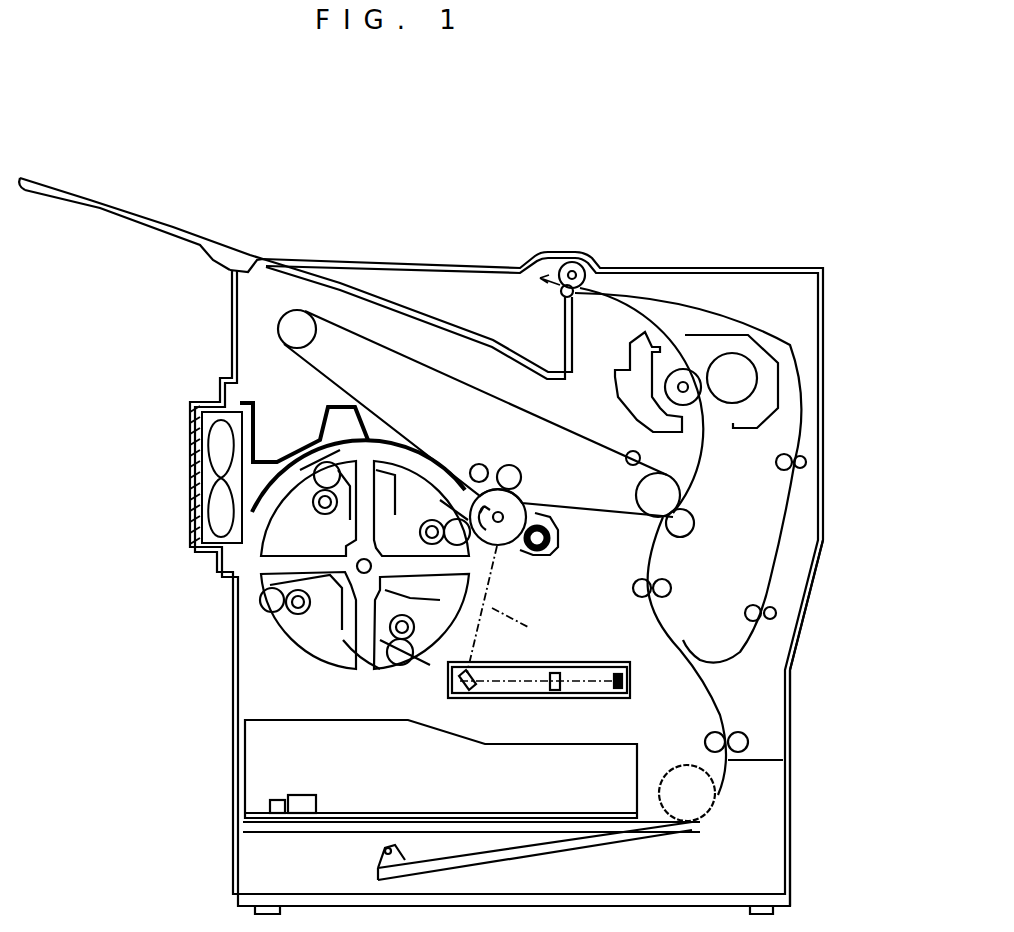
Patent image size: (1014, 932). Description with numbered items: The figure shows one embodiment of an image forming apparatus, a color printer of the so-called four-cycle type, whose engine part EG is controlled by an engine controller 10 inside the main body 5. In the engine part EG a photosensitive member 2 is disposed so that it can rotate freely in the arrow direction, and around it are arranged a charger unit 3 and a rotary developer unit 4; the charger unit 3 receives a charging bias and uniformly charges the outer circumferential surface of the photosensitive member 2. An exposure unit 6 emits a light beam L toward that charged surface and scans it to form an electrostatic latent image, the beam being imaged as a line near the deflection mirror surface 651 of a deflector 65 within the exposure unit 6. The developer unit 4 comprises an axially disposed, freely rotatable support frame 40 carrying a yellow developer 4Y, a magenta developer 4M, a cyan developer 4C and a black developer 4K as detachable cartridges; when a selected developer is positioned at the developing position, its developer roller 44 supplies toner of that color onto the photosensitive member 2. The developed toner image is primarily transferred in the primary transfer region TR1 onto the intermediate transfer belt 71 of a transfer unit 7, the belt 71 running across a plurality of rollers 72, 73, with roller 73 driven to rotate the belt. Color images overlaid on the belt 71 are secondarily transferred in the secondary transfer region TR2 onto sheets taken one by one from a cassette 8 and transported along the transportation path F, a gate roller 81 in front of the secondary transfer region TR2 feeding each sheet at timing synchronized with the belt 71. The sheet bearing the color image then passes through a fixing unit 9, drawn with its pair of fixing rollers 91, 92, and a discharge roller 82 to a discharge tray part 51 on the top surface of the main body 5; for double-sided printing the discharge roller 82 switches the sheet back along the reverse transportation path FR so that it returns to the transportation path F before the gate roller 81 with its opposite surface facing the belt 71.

The photosensitive member 2 is at (517, 506).
The charger unit 3 is at (543, 556).
The rotary developer unit 4 is at (316, 568).
The yellow developer 4Y is at (320, 548).
The magenta developer 4M is at (308, 620).
The cyan developer 4C is at (443, 614).
The black developer 4K is at (433, 518).
The main body 5 is at (457, 266).
The exposure unit 6 is at (504, 683).
The transfer unit 7 is at (282, 386).
The cassette 8 is at (267, 868).
The fixing unit 9 is at (728, 318).
The engine controller 10 is at (522, 805).
The support frame 40 is at (343, 640).
The developer roller 44 is at (262, 600).
The discharge tray part 51 is at (391, 300).
The deflector 65 is at (610, 672).
The deflection mirror surface 651 is at (612, 697).
The intermediate transfer belt 71 is at (410, 364).
The roller 72 is at (305, 335).
The roller 73 is at (652, 494).
The gate roller 81 is at (672, 588).
The discharge roller 82 is at (579, 256).
The fixing roller 91 is at (673, 385).
The pressure roller 92 is at (740, 378).
The primary transfer region TR1 is at (499, 460).
The secondary transfer region TR2 is at (705, 513).
The light beam L is at (510, 609).
The transportation path F is at (717, 720).
The reverse transportation path FR is at (783, 527).
The engine part EG is at (760, 691).